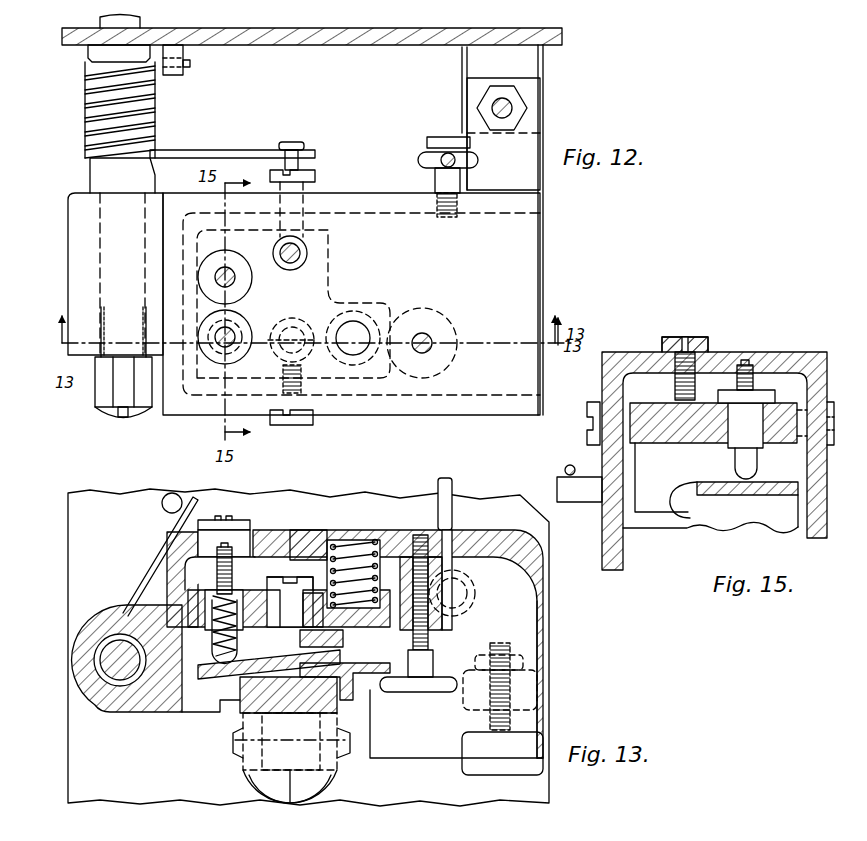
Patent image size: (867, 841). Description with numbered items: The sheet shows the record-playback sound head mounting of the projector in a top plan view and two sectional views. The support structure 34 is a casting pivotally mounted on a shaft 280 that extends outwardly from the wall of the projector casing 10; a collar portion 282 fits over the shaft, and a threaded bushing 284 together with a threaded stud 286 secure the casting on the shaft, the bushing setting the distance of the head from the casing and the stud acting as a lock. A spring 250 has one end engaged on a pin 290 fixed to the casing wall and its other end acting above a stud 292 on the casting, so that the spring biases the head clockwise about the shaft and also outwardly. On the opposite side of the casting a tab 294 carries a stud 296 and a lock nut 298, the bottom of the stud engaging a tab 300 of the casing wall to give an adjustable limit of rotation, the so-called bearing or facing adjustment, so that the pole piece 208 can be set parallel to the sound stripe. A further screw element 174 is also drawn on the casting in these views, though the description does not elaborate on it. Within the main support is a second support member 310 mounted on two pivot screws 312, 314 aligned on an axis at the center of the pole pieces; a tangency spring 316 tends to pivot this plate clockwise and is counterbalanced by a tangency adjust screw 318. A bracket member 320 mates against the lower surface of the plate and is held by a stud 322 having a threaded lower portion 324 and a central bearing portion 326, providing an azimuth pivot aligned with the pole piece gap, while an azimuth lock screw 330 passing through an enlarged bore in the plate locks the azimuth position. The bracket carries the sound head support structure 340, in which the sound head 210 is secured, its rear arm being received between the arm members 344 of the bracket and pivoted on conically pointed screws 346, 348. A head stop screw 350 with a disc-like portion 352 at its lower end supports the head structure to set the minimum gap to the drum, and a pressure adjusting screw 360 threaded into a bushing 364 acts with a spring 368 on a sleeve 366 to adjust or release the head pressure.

In FIG. 12, the projector casing 10 is at (430, 30).
In FIG. 12, the support structure 34 is at (532, 256).
In FIG. 12, the screw 174 is at (450, 150).
In FIG. 13, the screw 174 is at (453, 496).
In FIG. 12, the pole piece 208 is at (346, 333).
In FIG. 13, the pole piece 208 is at (300, 792).
In FIG. 13, the sound head 210 is at (285, 786).
In FIG. 12, the spring 250 is at (172, 149).
In FIG. 15, the spring 250 is at (571, 466).
In FIG. 13, the spring 250 is at (185, 600).
In FIG. 12, the shaft 280 is at (88, 95).
In FIG. 13, the shaft 280 is at (120, 672).
In FIG. 12, the collar portion 282 is at (74, 194).
In FIG. 13, the collar portion 282 is at (146, 714).
In FIG. 12, the threaded bushing 284 is at (96, 400).
In FIG. 12, the threaded stud 286 is at (122, 421).
In FIG. 12, the pin 290 is at (190, 70).
In FIG. 13, the pin 290 is at (172, 493).
In FIG. 12, the stud 292 is at (292, 140).
In FIG. 15, the stud 292 is at (557, 490).
In FIG. 13, the stud 292 is at (346, 658).
In FIG. 12, the tab 294 is at (530, 160).
In FIG. 12, the stud 296 is at (512, 110).
In FIG. 13, the stud 296 is at (536, 690).
In FIG. 12, the lock nut 298 is at (508, 100).
In FIG. 13, the lock nut 298 is at (512, 653).
In FIG. 12, the tab 300 is at (461, 78).
In FIG. 13, the tab 300 is at (546, 742).
In FIG. 12, the second support member 310 is at (395, 304).
In FIG. 15, the second support member 310 is at (640, 402).
In FIG. 13, the second support member 310 is at (287, 592).
In FIG. 12, the pivot screw 312 is at (314, 176).
In FIG. 15, the pivot screw 312 is at (588, 405).
In FIG. 12, the pivot screw 314 is at (312, 425).
In FIG. 15, the pivot screw 314 is at (830, 420).
In FIG. 12, the tangency spring 316 is at (356, 320).
In FIG. 13, the tangency spring 316 is at (352, 566).
In FIG. 12, the tangency adjust screw 318 is at (229, 274).
In FIG. 15, the tangency adjust screw 318 is at (690, 346).
In FIG. 13, the tangency adjust screw 318 is at (212, 517).
In FIG. 15, the bracket member 320 is at (655, 526).
In FIG. 12, the stud 322 is at (292, 342).
In FIG. 13, the stud 322 is at (302, 585).
In FIG. 13, the threaded lower portion 324 is at (322, 640).
In FIG. 13, the central bearing portion 326 is at (312, 598).
In FIG. 12, the azimuth lock screw 330 is at (297, 250).
In FIG. 15, the sound head support structure 340 is at (735, 500).
In FIG. 13, the sound head support structure 340 is at (372, 712).
In FIG. 13, the arm members 344 is at (340, 790).
In FIG. 13, the conically pointed screw 346 is at (240, 756).
In FIG. 13, the conically pointed screw 348 is at (352, 755).
In FIG. 12, the head stop screw 350 is at (428, 338).
In FIG. 13, the head stop screw 350 is at (421, 535).
In FIG. 12, the disc-like portion 352 is at (460, 340).
In FIG. 13, the disc-like portion 352 is at (418, 694).
In FIG. 12, the pressure adjusting screw 360 is at (232, 334).
In FIG. 15, the pressure adjusting screw 360 is at (751, 368).
In FIG. 13, the pressure adjusting screw 360 is at (229, 545).
In FIG. 15, the bushing 364 is at (727, 390).
In FIG. 13, the bushing 364 is at (166, 556).
In FIG. 15, the sleeve 366 is at (733, 462).
In FIG. 13, the sleeve 366 is at (210, 645).
In FIG. 13, the spring 368 is at (208, 615).